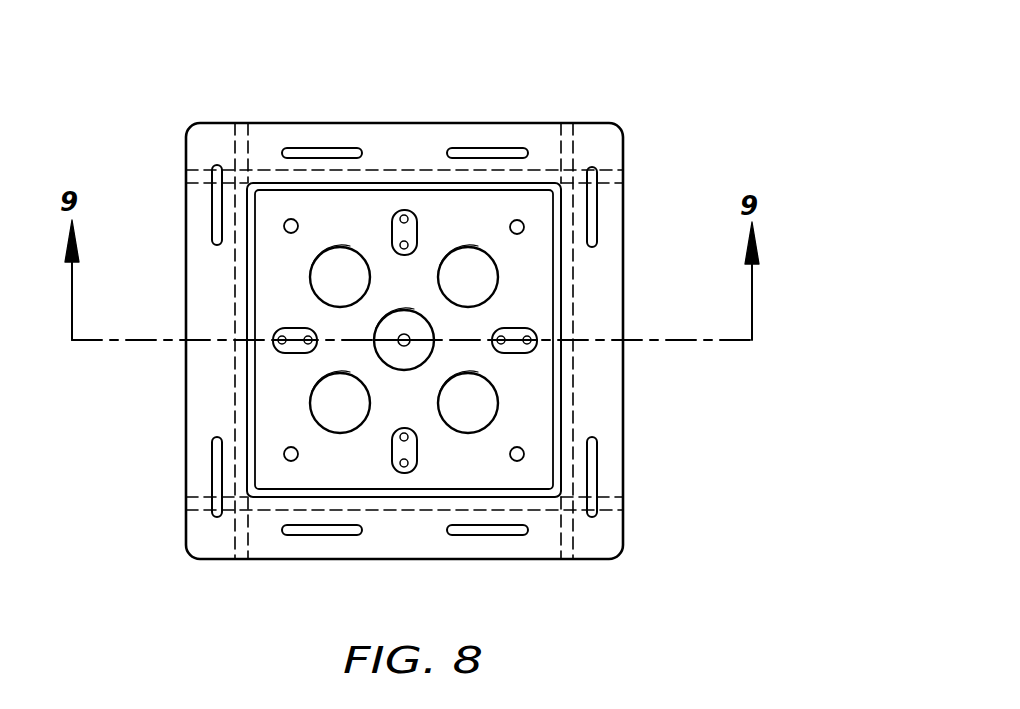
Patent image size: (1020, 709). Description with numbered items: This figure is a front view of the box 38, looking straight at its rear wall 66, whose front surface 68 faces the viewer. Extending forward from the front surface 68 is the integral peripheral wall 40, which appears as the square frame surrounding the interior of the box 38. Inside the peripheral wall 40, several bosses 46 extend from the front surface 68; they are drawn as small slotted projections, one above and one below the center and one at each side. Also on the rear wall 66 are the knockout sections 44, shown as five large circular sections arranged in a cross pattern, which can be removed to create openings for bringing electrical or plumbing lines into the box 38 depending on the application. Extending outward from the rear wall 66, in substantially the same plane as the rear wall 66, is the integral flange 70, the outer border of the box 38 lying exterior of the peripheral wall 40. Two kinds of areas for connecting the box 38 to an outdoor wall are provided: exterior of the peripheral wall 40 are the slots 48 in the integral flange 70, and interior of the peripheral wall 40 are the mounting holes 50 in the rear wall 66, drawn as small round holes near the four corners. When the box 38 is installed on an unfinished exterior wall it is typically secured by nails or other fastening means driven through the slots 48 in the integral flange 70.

The box 38 is at (745, 57).
The integral peripheral wall 40 is at (557, 397).
The knockout sections 44 is at (439, 275).
The bosses 46 is at (409, 211).
The slots 48 is at (330, 535).
The mounting holes 50 is at (284, 447).
The rear wall 66 is at (537, 243).
The front surface 68 is at (350, 229).
The integral flange 70 is at (543, 545).